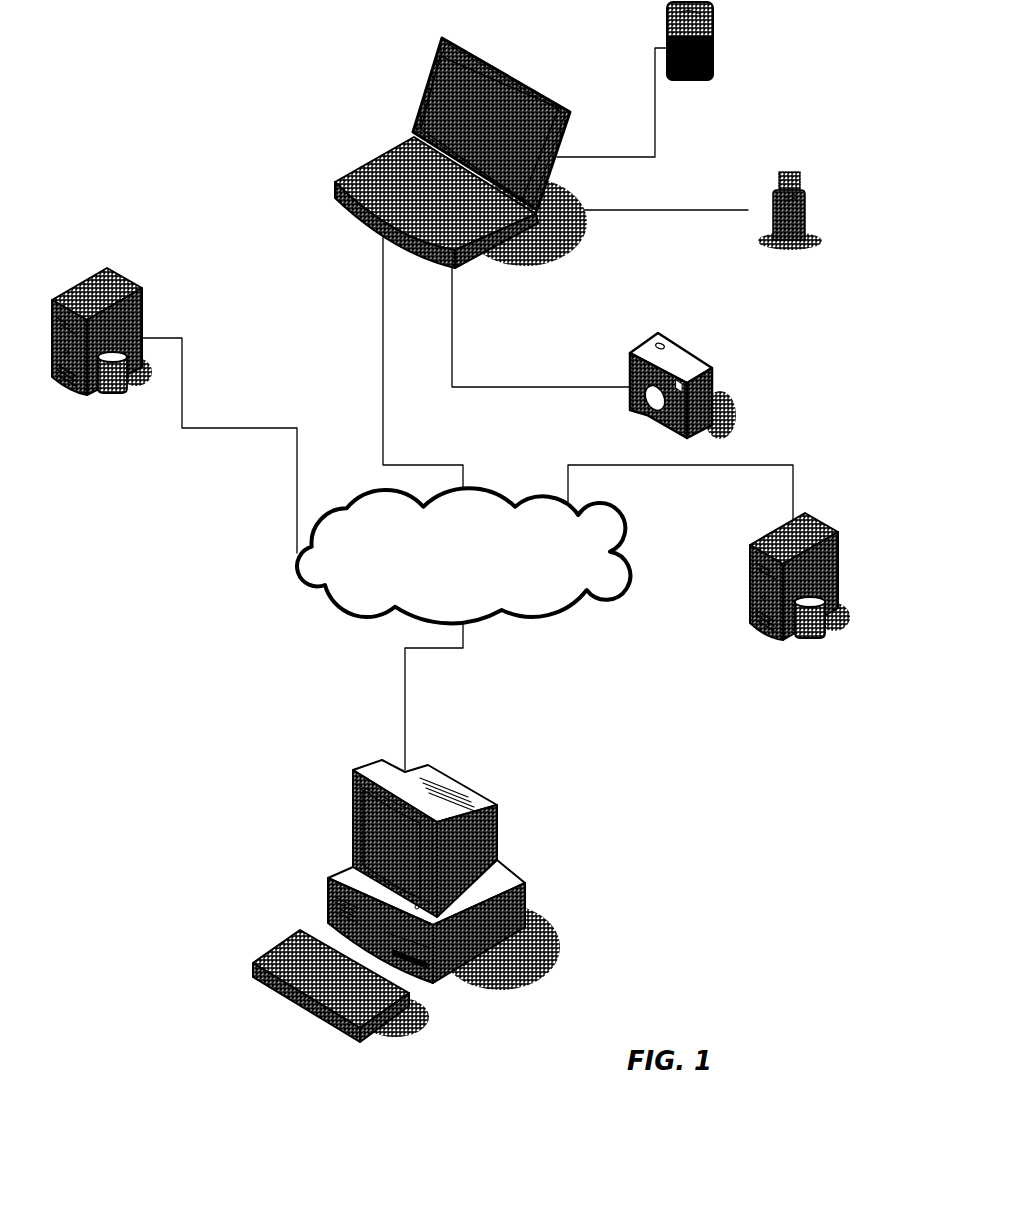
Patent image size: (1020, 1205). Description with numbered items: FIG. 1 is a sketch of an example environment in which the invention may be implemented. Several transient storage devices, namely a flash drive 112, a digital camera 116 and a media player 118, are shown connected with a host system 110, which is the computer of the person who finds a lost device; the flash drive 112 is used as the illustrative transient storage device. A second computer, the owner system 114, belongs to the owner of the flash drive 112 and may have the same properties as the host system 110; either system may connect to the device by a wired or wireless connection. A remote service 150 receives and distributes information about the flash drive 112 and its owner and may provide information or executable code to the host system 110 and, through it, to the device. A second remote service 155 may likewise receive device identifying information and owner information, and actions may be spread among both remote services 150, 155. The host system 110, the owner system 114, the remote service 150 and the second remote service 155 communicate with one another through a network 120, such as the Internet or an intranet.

The host system 110 is at (335, 182).
The flash drive 112 is at (801, 207).
The owner system 114 is at (352, 812).
The digital camera 116 is at (668, 341).
The media player 118 is at (713, 42).
The network 120 is at (487, 568).
The remote service 150 is at (102, 347).
The second remote service 155 is at (800, 592).